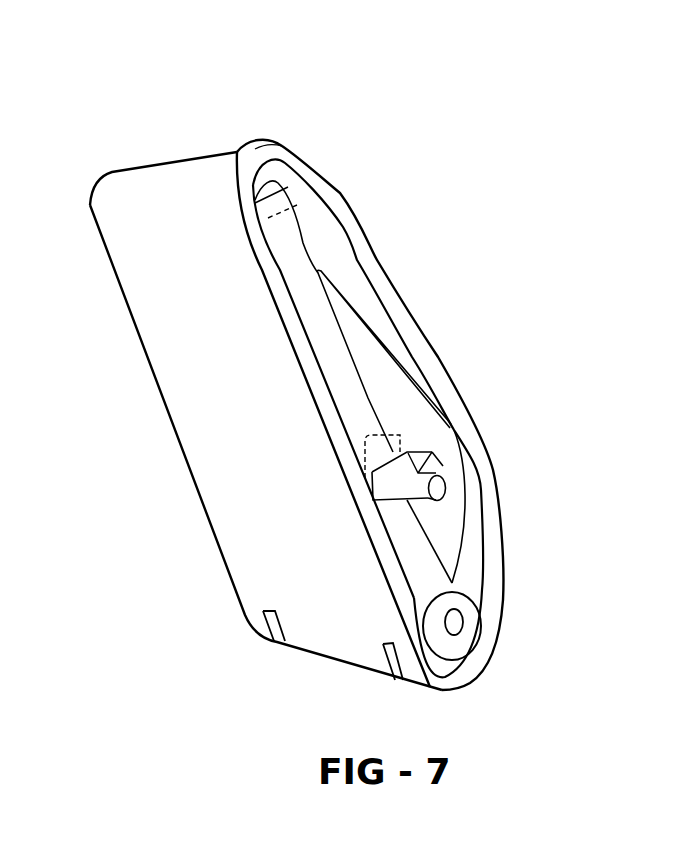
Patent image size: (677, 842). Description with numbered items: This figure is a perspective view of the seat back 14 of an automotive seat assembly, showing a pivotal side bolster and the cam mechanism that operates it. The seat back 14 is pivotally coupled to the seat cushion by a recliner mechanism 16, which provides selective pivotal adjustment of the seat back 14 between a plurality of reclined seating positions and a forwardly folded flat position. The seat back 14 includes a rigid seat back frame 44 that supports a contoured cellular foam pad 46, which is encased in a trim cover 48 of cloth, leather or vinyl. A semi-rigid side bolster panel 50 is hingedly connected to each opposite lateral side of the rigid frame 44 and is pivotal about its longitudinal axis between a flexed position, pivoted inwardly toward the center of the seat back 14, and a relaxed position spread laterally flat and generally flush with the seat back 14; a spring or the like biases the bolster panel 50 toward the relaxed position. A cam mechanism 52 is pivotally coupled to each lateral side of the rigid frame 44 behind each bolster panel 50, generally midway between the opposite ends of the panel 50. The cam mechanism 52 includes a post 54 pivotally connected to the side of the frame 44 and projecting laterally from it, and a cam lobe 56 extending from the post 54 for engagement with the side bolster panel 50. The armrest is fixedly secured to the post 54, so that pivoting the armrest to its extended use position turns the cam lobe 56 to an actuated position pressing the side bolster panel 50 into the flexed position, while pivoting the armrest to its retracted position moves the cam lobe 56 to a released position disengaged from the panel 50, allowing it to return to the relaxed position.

The seat back 14 is at (163, 197).
The recliner mechanism 16 is at (472, 627).
The rigid seat back frame 44 is at (303, 243).
The contoured cellular foam pad 46 is at (326, 188).
The trim cover 48 is at (303, 148).
The side bolster panel 50 is at (353, 318).
The cam mechanism 52 is at (452, 481).
The post 54 is at (418, 455).
The cam lobe 56 is at (410, 492).